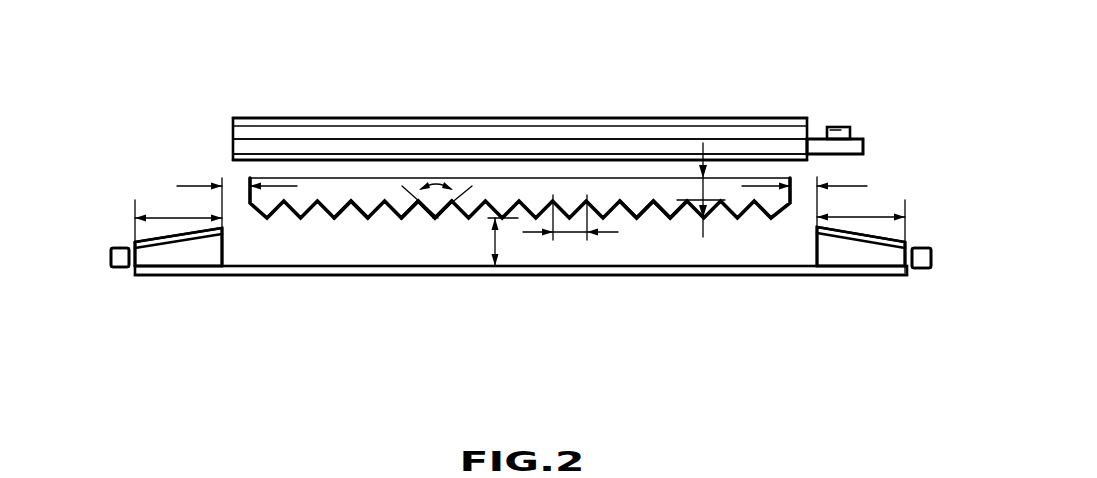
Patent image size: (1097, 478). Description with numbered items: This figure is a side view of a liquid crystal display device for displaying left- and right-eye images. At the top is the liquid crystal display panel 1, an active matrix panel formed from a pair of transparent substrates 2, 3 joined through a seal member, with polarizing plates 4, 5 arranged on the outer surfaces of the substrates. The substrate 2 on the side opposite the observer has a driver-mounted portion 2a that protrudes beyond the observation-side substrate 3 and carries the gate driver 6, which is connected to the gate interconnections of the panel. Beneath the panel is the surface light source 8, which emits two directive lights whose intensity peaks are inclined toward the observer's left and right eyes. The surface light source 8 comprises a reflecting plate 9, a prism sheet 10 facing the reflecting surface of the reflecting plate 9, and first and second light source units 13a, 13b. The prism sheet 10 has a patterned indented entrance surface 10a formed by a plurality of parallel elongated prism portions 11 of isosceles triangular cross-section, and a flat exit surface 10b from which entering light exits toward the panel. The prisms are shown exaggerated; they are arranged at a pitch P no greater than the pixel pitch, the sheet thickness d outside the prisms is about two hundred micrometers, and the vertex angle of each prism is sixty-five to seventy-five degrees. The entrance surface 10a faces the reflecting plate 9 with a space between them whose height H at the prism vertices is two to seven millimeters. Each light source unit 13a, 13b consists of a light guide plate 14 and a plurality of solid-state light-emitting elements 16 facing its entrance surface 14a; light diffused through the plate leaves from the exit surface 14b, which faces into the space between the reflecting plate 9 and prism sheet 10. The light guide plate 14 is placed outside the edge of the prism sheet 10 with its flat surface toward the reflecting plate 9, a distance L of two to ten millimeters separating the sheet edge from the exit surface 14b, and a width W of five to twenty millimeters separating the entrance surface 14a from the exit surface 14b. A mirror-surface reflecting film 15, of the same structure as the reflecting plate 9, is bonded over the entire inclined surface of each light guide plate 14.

The liquid crystal display panel 1 is at (265, 111).
The substrate 2 is at (780, 145).
The driver-mounted portion 2a is at (852, 138).
The substrate 3 is at (737, 132).
The polarizing plate 4 is at (682, 154).
The polarizing plate 5 is at (618, 117).
The gate driver 6 is at (835, 127).
The surface light source 8 is at (400, 289).
The reflecting plate 9 is at (483, 276).
The prism sheet 10 is at (540, 190).
The entrance surface 10a is at (352, 221).
The exit surface 10b is at (339, 167).
The elongated prism portion 11 is at (412, 218).
The first light source unit 13a is at (127, 222).
The second light source unit 13b is at (915, 225).
The light guide plate 14 is at (207, 255).
The entrance surface 14a is at (136, 254).
The exit surface 14b is at (223, 250).
The mirror-surface reflecting film 15 is at (185, 243).
The solid-state light-emitting element 16 is at (121, 268).
The distance L is at (235, 181).
The width W is at (520, 231).
The height H is at (494, 242).
The pitch P is at (570, 227).
The thickness d is at (705, 192).